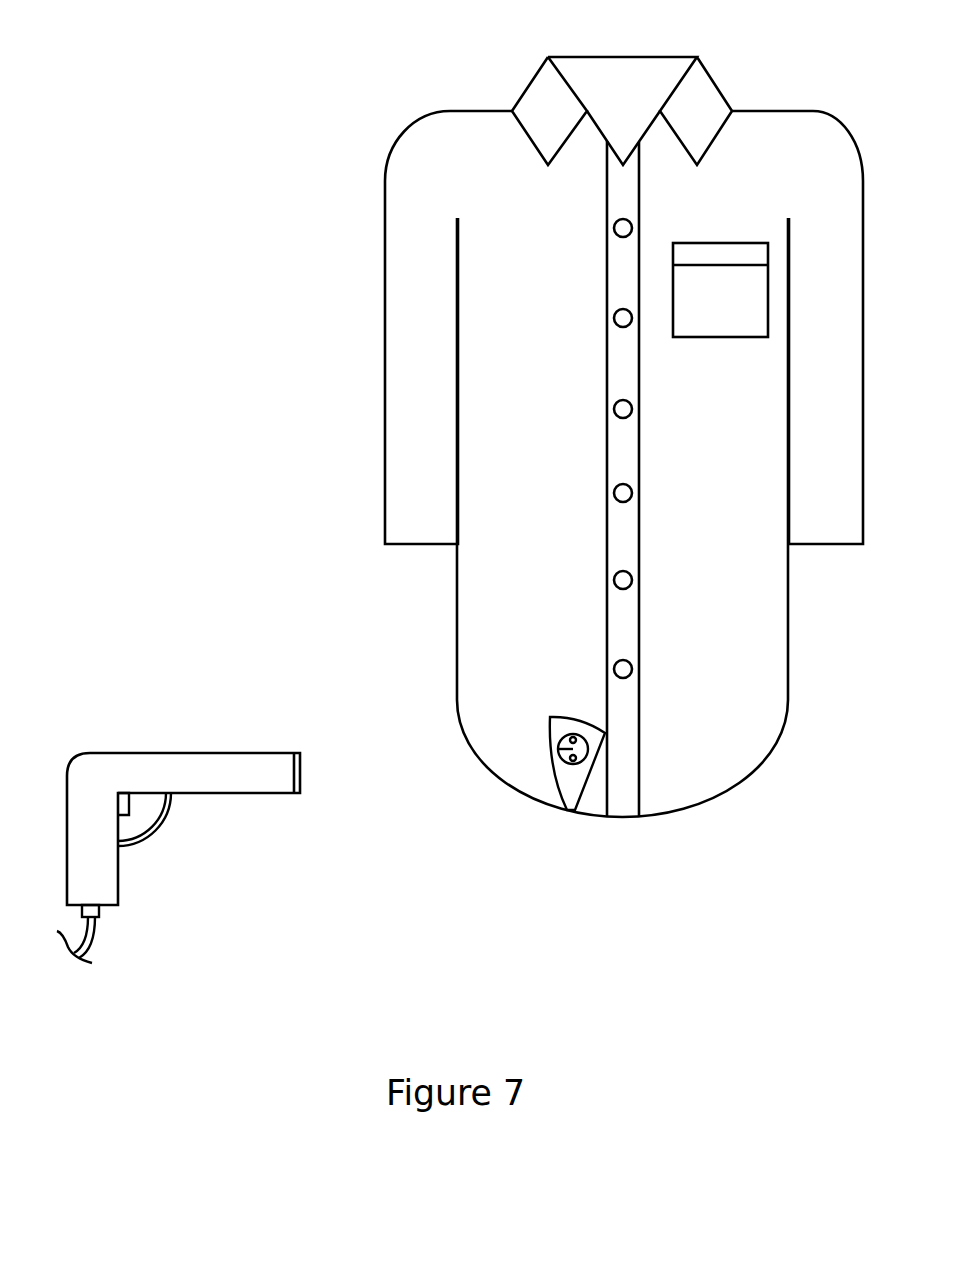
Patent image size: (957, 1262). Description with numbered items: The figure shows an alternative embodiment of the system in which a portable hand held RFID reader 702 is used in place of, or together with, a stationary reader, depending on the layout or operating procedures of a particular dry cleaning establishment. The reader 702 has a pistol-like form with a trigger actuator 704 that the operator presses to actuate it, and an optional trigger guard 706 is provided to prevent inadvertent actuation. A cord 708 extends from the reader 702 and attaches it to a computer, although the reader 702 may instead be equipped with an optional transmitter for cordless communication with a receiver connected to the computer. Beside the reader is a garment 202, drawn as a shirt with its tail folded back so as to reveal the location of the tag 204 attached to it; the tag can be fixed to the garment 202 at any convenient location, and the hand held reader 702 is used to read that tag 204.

The garment 202 is at (469, 152).
The RFID tag 204 is at (558, 749).
The RFID reader 702 is at (185, 757).
The trigger actuator 704 is at (122, 813).
The trigger guard 706 is at (163, 815).
The cord 708 is at (95, 927).